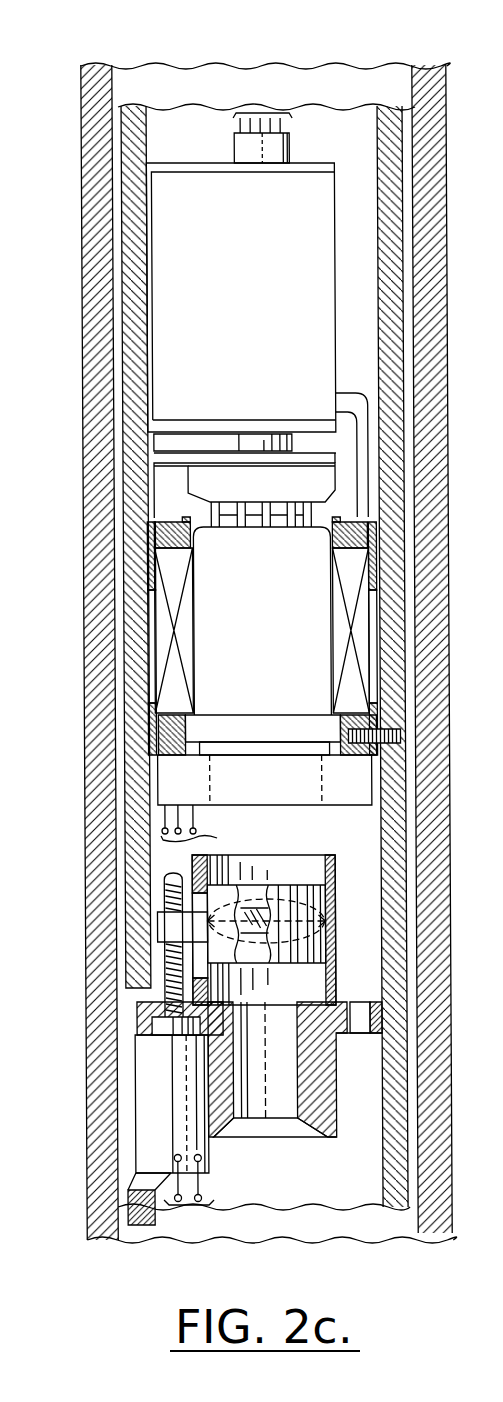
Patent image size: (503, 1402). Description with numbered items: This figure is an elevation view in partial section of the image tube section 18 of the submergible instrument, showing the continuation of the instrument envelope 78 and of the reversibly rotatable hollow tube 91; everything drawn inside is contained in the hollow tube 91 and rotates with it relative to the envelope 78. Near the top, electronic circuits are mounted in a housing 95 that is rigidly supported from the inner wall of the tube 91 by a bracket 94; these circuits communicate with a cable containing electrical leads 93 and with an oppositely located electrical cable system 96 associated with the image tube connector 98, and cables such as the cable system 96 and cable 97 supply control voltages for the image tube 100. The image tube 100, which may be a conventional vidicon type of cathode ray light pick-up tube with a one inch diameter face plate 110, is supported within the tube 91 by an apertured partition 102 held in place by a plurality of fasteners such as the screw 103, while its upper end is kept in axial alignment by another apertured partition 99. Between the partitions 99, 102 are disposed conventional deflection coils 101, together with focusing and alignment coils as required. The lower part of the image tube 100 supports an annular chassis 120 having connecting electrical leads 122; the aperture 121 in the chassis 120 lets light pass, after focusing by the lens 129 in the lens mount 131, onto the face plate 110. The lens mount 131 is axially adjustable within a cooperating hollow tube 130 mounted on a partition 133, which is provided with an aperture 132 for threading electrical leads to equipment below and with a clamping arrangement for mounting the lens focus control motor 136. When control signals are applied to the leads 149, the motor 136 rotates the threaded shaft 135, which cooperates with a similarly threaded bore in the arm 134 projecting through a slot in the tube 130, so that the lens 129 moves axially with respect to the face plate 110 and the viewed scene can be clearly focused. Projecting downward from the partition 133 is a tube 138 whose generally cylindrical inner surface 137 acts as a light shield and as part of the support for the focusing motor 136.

The image tube section 18 is at (450, 194).
The instrument envelope 78 is at (433, 63).
The reversibly rotatable hollow tube 91 is at (385, 160).
The electrical leads 93 is at (262, 112).
The bracket 94 is at (150, 208).
The housing 95 is at (163, 298).
The electrical cable system 96 is at (243, 440).
The cable 97 is at (354, 393).
The image tube connector 98 is at (184, 486).
The apertured partition 99 is at (350, 512).
The image tube 100 is at (320, 572).
The deflection coils 101 is at (360, 622).
The apertured partition 102 is at (355, 713).
The screw 103 is at (404, 741).
The face plate 110 is at (299, 745).
The annular chassis 120 is at (360, 782).
The aperture 121 is at (206, 783).
The connecting electrical leads 122 is at (210, 841).
The lens 129 is at (255, 900).
The hollow tube 130 is at (330, 872).
The lens mount 131 is at (310, 950).
The aperture 132 is at (362, 1003).
The partition 133 is at (341, 1035).
The arm 134 is at (153, 918).
The threaded shaft 135 is at (166, 968).
The lens focus control motor 136 is at (143, 1082).
The cylindrical inner surface 137 is at (292, 1097).
The tube 138 is at (322, 1137).
The leads 149 is at (183, 1207).